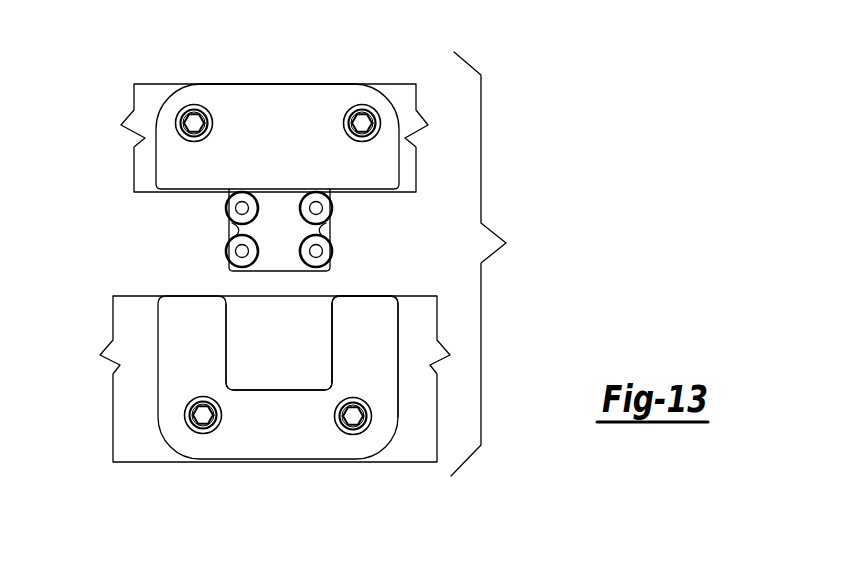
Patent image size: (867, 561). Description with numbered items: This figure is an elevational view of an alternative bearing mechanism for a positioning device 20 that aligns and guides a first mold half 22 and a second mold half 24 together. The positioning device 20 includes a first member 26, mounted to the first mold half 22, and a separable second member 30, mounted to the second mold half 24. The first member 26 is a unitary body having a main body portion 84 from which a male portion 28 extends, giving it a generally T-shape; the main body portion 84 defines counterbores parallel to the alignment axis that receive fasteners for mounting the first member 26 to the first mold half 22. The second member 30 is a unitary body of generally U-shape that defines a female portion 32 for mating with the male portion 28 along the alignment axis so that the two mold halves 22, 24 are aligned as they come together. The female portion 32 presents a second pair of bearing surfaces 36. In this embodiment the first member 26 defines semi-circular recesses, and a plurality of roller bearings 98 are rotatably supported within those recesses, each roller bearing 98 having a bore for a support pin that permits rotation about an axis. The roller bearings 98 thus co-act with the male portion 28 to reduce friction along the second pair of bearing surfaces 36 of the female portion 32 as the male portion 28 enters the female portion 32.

The positioning device 20 is at (150, 239).
The first mold half 22 is at (398, 93).
The second mold half 24 is at (126, 428).
The first member 26 is at (304, 98).
The male portion 28 is at (278, 258).
The second member 30 is at (267, 449).
The female portion 32 is at (365, 303).
The second pair of bearing surfaces 36 is at (226, 340).
The main body portion 84 is at (245, 92).
The roller bearings 98 is at (225, 210).